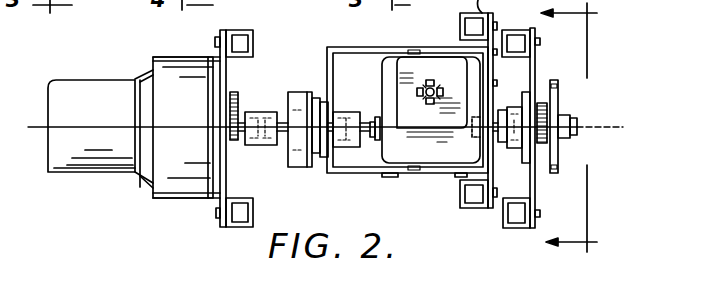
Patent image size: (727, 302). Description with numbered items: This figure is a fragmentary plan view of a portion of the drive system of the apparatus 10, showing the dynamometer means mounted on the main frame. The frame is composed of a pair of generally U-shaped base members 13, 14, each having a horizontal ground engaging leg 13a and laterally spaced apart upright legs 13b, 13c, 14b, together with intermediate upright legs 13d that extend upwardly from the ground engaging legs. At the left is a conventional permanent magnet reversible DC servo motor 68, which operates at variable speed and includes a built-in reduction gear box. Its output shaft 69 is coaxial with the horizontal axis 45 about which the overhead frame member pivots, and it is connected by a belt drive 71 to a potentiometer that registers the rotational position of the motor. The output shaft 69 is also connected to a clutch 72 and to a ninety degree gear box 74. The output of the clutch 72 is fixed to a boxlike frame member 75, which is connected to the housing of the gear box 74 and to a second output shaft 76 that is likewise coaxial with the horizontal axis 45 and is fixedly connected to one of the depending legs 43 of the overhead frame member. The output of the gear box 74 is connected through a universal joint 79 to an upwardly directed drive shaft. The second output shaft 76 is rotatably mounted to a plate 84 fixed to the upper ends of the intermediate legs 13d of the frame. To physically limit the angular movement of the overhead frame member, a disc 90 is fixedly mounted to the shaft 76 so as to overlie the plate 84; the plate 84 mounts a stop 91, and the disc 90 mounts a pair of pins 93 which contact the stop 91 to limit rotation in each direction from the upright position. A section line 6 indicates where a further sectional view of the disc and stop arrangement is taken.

The servo motor 68 is at (103, 97).
The output shaft 69 is at (233, 141).
The belt drive 71 is at (235, 100).
The clutch 72 is at (301, 91).
The 90° gear box 74 is at (407, 63).
The boxlike frame member 75 is at (405, 113).
The second output shaft 76 is at (477, 138).
The universal joint 79 is at (430, 80).
The plate 84 is at (541, 149).
The disc 90 is at (558, 105).
The stop 91 is at (570, 117).
The pins 93 is at (552, 80).
The horizontal axis 45 is at (590, 127).
The apparatus 10 is at (471, 127).
The base member 13 is at (212, 230).
The horizontal ground engaging leg 13a is at (519, 28).
The upright leg 13b is at (243, 229).
The upright leg 13c is at (706, 6).
The intermediate upright leg 13d is at (513, 228).
The base member 14 is at (224, 136).
The upright leg 14b is at (231, 30).
The depending legs 43 is at (468, 209).
The section line 6- 6 is at (582, 129).